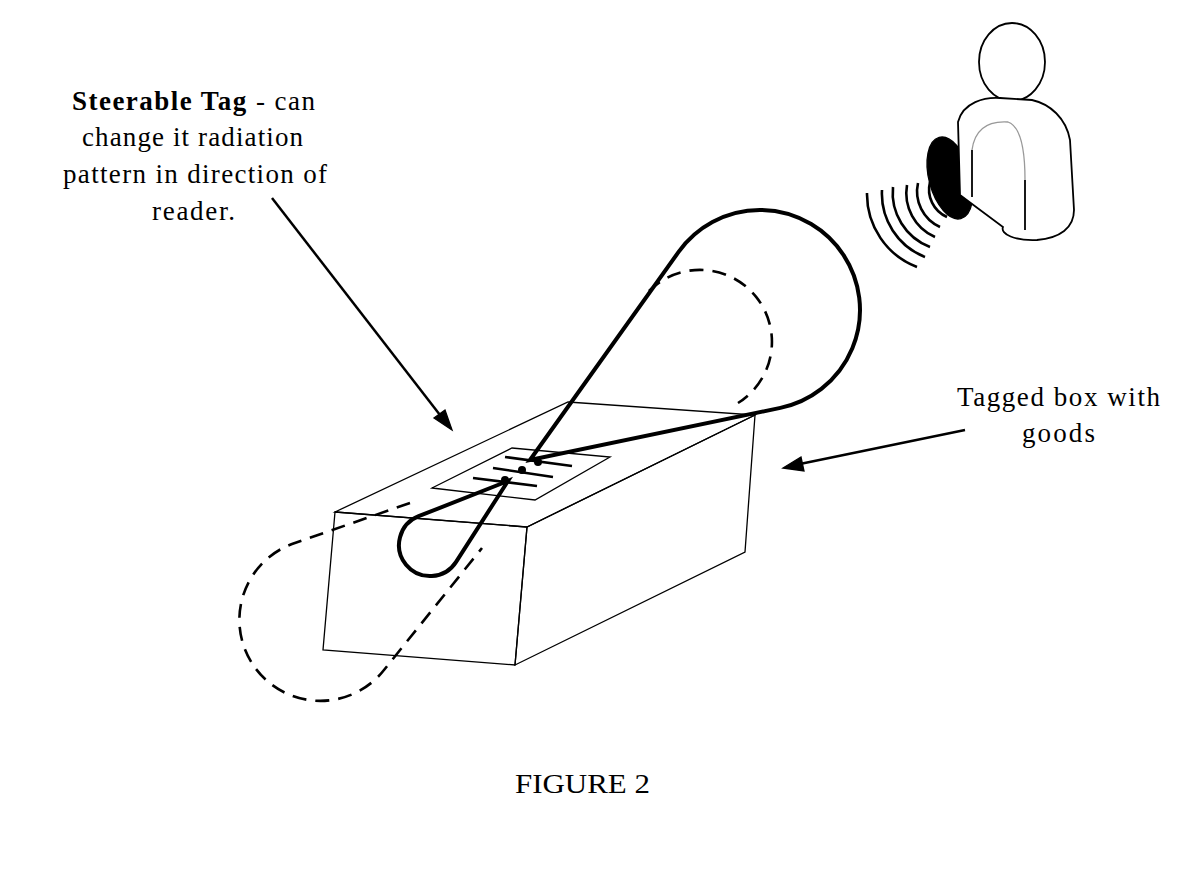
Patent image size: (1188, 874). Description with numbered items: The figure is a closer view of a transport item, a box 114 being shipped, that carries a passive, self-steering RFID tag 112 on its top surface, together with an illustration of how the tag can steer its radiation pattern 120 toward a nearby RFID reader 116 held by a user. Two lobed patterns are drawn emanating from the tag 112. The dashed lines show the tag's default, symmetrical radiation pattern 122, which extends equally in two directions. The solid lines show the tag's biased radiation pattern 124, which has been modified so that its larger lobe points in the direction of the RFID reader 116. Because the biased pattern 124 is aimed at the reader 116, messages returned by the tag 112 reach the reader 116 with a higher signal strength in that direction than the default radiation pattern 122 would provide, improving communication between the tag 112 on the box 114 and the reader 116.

The self-steering RFID tag 112 is at (463, 473).
The box 114 is at (660, 548).
The RFID reader 116 is at (1063, 148).
The radiation pattern 120 is at (629, 334).
The default symmetrical radiation pattern 122 is at (702, 275).
The biased radiation pattern 124 is at (785, 208).